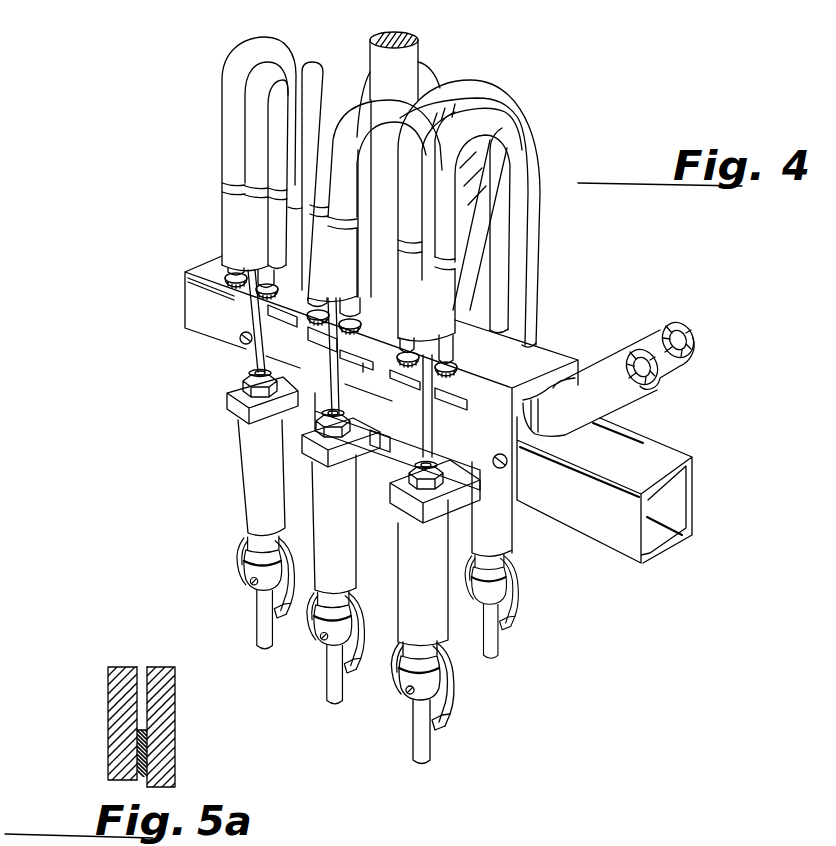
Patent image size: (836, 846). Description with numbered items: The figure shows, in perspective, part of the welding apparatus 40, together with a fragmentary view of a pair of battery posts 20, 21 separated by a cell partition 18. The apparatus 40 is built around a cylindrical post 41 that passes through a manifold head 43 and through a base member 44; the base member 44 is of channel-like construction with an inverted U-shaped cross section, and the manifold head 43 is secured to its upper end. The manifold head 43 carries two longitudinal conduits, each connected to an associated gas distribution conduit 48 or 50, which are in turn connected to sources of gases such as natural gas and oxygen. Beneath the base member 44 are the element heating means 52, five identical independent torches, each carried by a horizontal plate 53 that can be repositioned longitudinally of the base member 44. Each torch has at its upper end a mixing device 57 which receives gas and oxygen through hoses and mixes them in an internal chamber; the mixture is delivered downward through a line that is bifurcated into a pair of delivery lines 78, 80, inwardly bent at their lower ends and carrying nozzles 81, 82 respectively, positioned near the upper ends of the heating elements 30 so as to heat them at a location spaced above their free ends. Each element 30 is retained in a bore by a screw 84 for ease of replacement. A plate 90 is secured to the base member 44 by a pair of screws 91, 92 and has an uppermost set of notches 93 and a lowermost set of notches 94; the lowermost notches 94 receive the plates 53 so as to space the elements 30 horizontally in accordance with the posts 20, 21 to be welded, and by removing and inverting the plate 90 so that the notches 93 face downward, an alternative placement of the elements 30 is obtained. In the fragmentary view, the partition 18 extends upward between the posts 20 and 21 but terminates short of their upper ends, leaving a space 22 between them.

In FIG. 4, the post 41 is at (403, 64).
In FIG. 4, the apparatus 40 is at (558, 251).
In FIG. 4, the gas distribution conduit 50 is at (655, 328).
In FIG. 4, the manifold head 43 is at (544, 360).
In FIG. 4, the gas distribution conduit 48 is at (620, 394).
In FIG. 4, the base member 44 is at (665, 462).
In FIG. 4, the mixing device 57 is at (235, 229).
In FIG. 4, the screw 92 is at (245, 340).
In FIG. 4, the uppermost set of notches 93 is at (398, 381).
In FIG. 4, the lowermost set of notches 94 is at (375, 440).
In FIG. 4, the plate 90 is at (522, 443).
In FIG. 4, the screw 91 is at (503, 470).
In FIG. 4, the horizontal plate 53 is at (430, 505).
In FIG. 4, the element heating means 52 is at (452, 640).
In FIG. 4, the screw 84 is at (323, 630).
In FIG. 4, the heating element 30 is at (336, 684).
In FIG. 4, the delivery line 78 is at (397, 652).
In FIG. 4, the nozzle 81 is at (402, 705).
In FIG. 4, the delivery line 80 is at (450, 695).
In FIG. 4, the nozzle 82 is at (447, 733).
In FIG. 5A, the space 22 is at (143, 666).
In FIG. 5A, the post 20 is at (117, 708).
In FIG. 5A, the post 21 is at (167, 695).
In FIG. 5A, the cell partition 18 is at (142, 745).